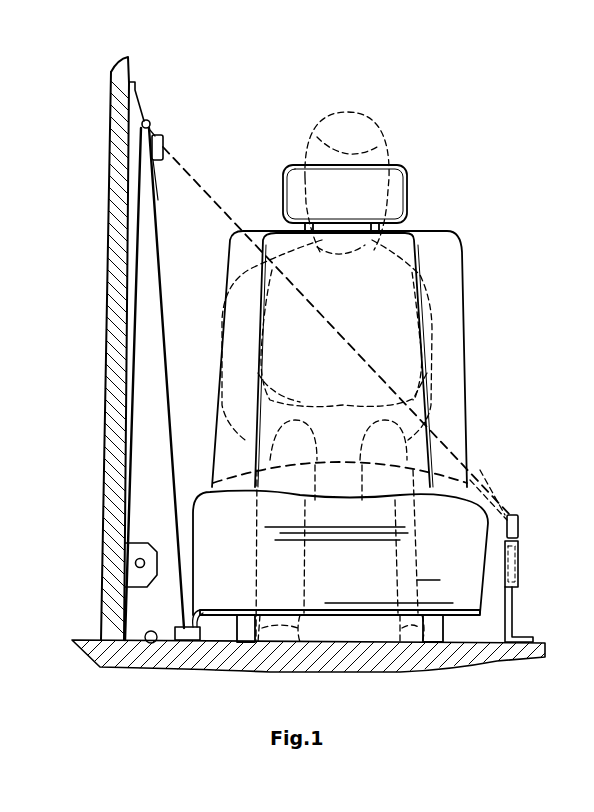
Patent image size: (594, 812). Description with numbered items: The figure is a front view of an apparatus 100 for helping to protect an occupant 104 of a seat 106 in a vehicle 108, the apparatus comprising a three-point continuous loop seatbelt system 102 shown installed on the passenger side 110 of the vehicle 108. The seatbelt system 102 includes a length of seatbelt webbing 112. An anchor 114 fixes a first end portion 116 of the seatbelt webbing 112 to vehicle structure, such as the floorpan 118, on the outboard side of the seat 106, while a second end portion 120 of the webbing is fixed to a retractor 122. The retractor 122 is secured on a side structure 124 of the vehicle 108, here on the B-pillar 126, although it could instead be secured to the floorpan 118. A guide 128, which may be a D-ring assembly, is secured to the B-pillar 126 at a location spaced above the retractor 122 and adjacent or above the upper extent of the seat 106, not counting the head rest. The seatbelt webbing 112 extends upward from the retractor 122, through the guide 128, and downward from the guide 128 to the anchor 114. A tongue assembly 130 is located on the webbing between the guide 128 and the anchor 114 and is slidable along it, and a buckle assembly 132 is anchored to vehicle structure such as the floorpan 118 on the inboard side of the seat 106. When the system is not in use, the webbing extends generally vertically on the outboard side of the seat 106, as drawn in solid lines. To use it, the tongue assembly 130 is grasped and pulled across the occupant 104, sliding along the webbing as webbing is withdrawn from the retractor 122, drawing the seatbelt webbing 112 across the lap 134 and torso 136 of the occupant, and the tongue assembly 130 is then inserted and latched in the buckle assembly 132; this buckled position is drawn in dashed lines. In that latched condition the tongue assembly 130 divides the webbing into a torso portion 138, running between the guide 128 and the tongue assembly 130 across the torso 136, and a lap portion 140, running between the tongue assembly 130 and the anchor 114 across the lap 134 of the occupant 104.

The apparatus 100 is at (77, 135).
The seatbelt system 102 is at (218, 172).
The occupant 104 is at (364, 119).
The seat 106 is at (422, 223).
The vehicle 108 is at (90, 325).
The passenger side 110 is at (192, 677).
The seatbelt webbing 112 is at (168, 357).
The anchor 114 is at (200, 606).
The first end portion 116 is at (180, 600).
The floorpan 118 is at (148, 644).
The second end portion 120 is at (163, 506).
The retractor 122 is at (123, 568).
The side structure 124 is at (115, 447).
The B-pillar 126 is at (118, 90).
The guide 128 is at (142, 105).
The tongue assembly 130 is at (160, 145).
The buckle assembly 132 is at (518, 587).
The lap 134 is at (407, 440).
The torso 136 is at (407, 343).
The torso portion 138 is at (363, 353).
The lap portion 140 is at (330, 466).